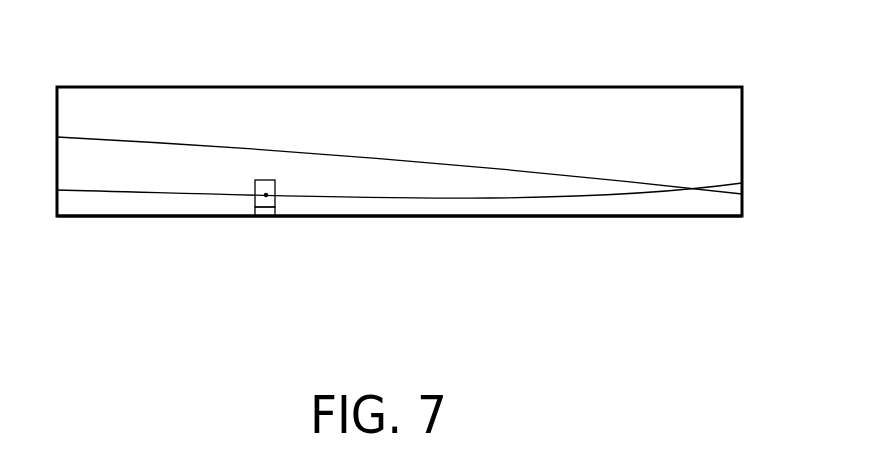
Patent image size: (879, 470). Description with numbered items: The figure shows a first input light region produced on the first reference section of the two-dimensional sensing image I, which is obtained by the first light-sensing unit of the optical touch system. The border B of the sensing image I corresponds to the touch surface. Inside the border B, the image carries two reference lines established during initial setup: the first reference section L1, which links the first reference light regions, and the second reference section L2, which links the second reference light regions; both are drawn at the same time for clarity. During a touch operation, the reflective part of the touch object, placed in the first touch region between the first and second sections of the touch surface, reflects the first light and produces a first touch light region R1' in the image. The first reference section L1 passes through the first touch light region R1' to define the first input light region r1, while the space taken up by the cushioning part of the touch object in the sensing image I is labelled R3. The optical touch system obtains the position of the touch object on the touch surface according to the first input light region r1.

The 2D sensing image I is at (690, 52).
The border B is at (563, 222).
The first reference section L1 is at (172, 192).
The second reference section L2 is at (402, 158).
The first touch light region R1' is at (280, 117).
The space taken up by the cushioning part R3 is at (254, 209).
The first input light region r1 is at (266, 195).